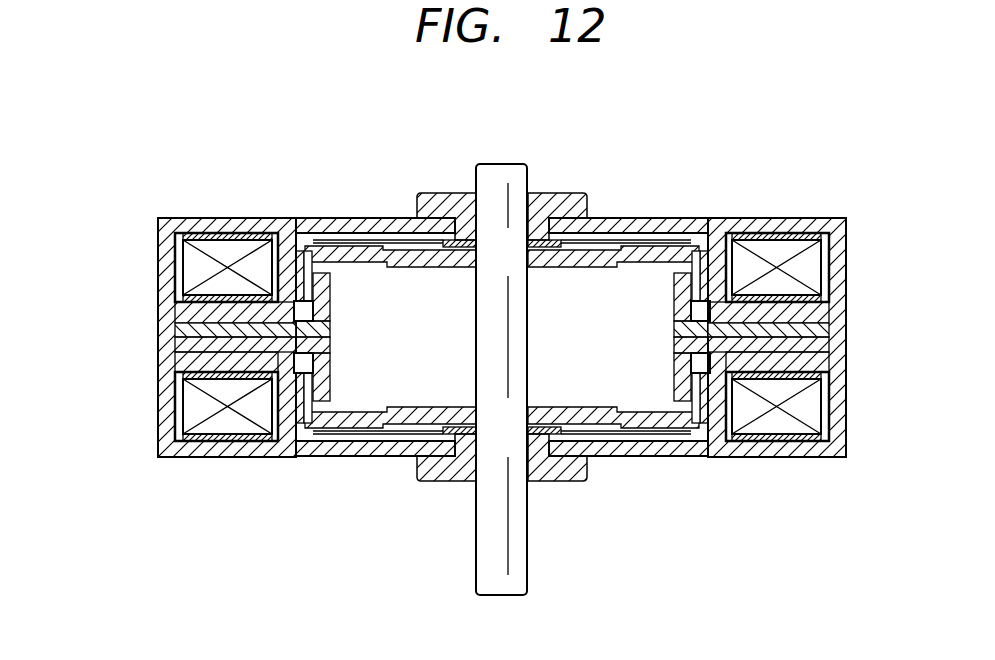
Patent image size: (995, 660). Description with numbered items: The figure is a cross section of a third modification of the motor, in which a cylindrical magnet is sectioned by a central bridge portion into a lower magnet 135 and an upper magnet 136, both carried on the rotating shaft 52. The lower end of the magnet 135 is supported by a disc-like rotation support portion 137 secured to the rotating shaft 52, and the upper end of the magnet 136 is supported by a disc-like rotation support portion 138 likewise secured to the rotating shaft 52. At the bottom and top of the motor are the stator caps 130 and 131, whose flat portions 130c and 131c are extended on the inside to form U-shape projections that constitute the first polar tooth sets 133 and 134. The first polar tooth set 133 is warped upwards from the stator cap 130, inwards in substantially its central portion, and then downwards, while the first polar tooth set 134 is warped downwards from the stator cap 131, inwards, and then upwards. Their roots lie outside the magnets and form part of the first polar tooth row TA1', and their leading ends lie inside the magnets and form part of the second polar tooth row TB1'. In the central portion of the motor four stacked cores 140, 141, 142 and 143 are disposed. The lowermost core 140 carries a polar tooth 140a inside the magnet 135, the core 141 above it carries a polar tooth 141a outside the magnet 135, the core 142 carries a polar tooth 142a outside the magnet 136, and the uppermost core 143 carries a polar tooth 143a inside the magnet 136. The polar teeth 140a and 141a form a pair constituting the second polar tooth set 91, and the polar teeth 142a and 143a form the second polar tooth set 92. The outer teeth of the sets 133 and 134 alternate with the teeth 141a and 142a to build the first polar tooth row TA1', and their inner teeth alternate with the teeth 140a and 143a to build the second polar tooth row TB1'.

The rotating shaft 52 is at (480, 165).
The second polar tooth set 91 is at (347, 391).
The second polar tooth set 92 is at (347, 283).
The stator cap 130 is at (823, 456).
The flat portion 130c is at (787, 456).
The stator cap 131 is at (823, 218).
The flat portion 131c is at (743, 218).
The first polar tooth set 133 is at (664, 395).
The first polar tooth set 134 is at (662, 355).
The magnet 135 is at (700, 423).
The magnet 136 is at (703, 218).
The disc-like rotation support portion 137 is at (377, 428).
The disc-like rotation support portion 138 is at (368, 246).
The core 140 is at (182, 367).
The polar tooth 140a is at (284, 457).
The core 141 is at (182, 347).
The polar tooth 141a is at (333, 361).
The core 142 is at (182, 331).
The polar tooth 142a is at (287, 218).
The core 143 is at (182, 313).
The polar tooth 143a is at (333, 306).
The first polar tooth row TA1' is at (786, 259).
The second polar tooth row TB1' is at (589, 213).